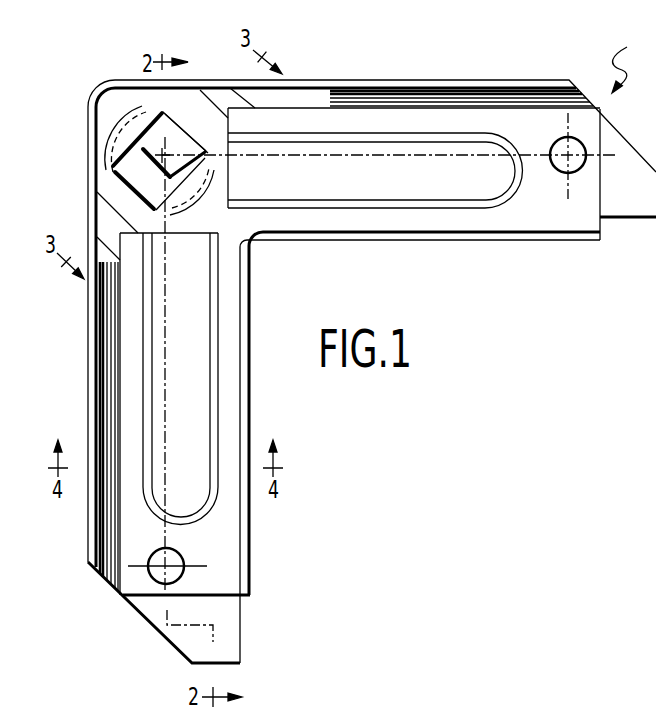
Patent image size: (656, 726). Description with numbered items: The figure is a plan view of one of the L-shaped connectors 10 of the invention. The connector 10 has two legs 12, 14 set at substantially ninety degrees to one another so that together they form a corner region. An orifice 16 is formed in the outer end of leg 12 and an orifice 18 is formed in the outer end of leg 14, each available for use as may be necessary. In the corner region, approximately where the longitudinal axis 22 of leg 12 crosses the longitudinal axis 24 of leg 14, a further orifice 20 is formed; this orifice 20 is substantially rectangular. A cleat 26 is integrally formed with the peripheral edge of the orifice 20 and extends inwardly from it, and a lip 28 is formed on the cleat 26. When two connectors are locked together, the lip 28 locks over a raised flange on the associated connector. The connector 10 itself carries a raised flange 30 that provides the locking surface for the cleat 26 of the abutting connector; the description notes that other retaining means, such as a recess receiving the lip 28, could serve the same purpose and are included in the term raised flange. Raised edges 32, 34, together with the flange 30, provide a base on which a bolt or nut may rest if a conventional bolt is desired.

The L-shaped connector 10 is at (372, 343).
The leg 12 is at (458, 90).
The leg 14 is at (105, 417).
The orifice 16 is at (559, 168).
The orifice 18 is at (160, 576).
The orifice 20 is at (132, 173).
The longitudinal axis 22 is at (438, 157).
The longitudinal axis 24 is at (166, 356).
The cleat 26 is at (171, 138).
The lip 28 is at (175, 178).
The raised flange 30 is at (135, 199).
The raised edge 32 is at (128, 124).
The raised edge 34 is at (193, 188).